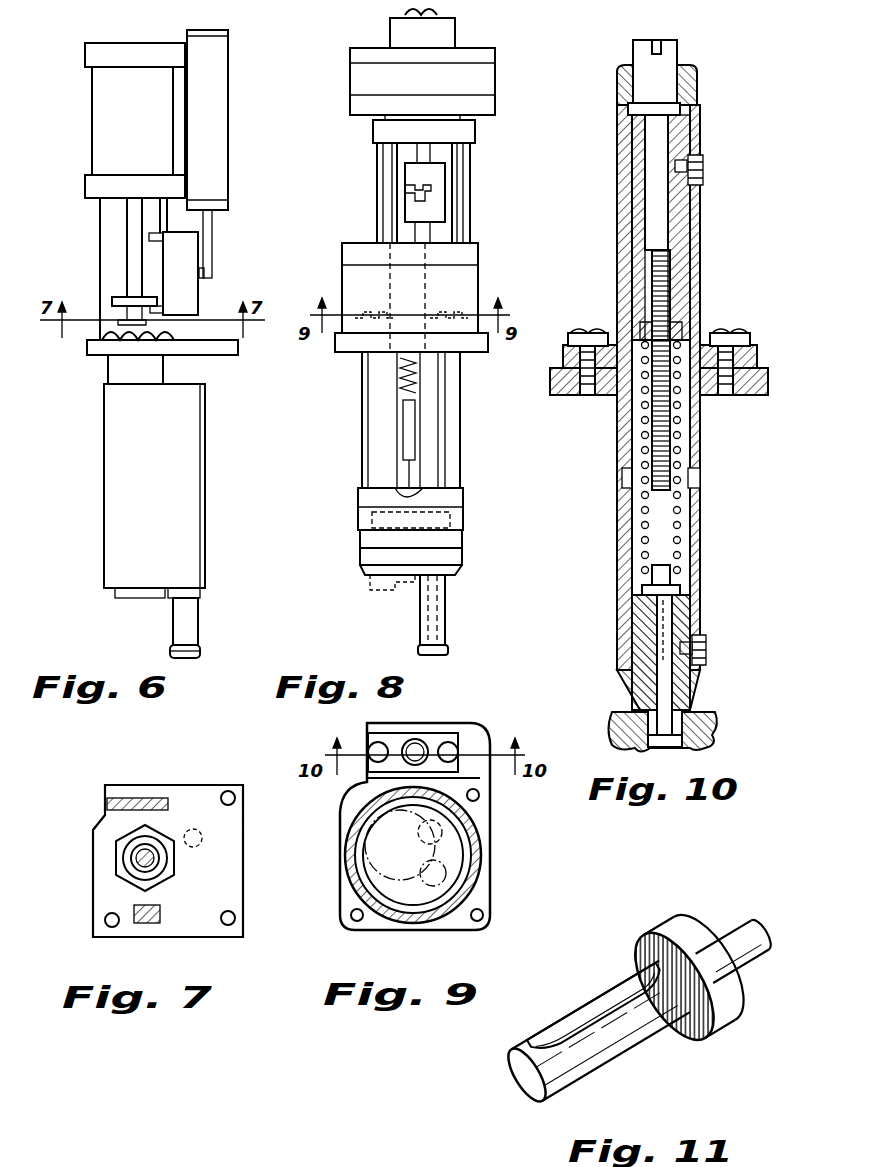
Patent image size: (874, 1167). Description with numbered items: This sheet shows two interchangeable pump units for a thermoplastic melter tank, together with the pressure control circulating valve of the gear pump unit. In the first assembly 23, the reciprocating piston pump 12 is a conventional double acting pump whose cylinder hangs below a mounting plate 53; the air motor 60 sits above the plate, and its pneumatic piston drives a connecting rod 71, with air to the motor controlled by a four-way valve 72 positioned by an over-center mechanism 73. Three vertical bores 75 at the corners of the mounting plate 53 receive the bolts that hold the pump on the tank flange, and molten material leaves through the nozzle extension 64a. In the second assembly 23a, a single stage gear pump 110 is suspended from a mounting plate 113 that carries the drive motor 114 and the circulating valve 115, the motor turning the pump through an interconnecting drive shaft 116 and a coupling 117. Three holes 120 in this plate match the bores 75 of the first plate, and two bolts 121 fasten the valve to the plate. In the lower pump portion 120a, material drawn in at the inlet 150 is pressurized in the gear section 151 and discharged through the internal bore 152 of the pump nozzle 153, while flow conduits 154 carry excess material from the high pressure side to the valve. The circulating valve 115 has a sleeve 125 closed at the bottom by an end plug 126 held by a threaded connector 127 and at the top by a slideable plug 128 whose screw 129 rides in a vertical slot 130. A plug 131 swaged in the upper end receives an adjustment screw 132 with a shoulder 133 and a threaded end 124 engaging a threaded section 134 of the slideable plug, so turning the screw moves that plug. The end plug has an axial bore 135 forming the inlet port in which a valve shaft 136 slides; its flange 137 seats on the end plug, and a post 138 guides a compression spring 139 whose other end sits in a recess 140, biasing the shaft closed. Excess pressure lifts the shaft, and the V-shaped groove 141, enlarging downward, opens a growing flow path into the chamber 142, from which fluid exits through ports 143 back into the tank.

In FIG. 6, the nut tightening assembly 23 is at (60, 82).
In FIG. 8, the nut tightening assembly (second embodiment) 23a is at (330, 65).
In FIG. 6, the reciprocating piston pump 12 is at (83, 525).
In FIG. 6, the mounting plate 53 is at (96, 350).
In FIG. 7, the mounting plate 53 is at (183, 783).
In FIG. 6, the air motor 60 is at (138, 121).
In FIG. 6, the nozzle extension 64a is at (195, 631).
In FIG. 7, the nozzle extension 64a is at (200, 845).
In FIG. 6, the connecting rod 71 is at (130, 226).
In FIG. 7, the connecting rod 71 is at (136, 862).
In FIG. 6, the 4-way valve 72 is at (215, 114).
In FIG. 6, the over-center mechanism 73 is at (190, 258).
In FIG. 7, the vertical bores 75 is at (235, 800).
In FIG. 8, the gear pump 110 is at (478, 538).
In FIG. 10, the gear pump 110 is at (720, 728).
In FIG. 8, the mounting plate 113 is at (343, 347).
In FIG. 9, the mounting plate 113 is at (480, 812).
In FIG. 10, the mounting plate 113 is at (760, 395).
In FIG. 8, the drive motor 114 is at (492, 70).
In FIG. 8, the circulating valve 115 is at (432, 295).
In FIG. 9, the circulating valve 115 is at (422, 745).
In FIG. 10, the circulating valve 115 is at (600, 595).
In FIG. 8, the interconnecting drive shaft 116 is at (440, 232).
In FIG. 8, the coupling 117 is at (450, 178).
In FIG. 9, the vertical holes 120 is at (480, 796).
In FIG. 8, the lower housing assembly 120a is at (333, 470).
In FIG. 8, the bolts 121 is at (455, 316).
In FIG. 9, the bolts 121 is at (452, 745).
In FIG. 10, the bolts 121 is at (592, 318).
In FIG. 10, the threaded lower end 124 is at (665, 453).
In FIG. 10, the sleeve 125 is at (692, 142).
In FIG. 10, the end plug 126 is at (632, 675).
In FIG. 10, the threaded connector 127 is at (708, 652).
In FIG. 10, the slideable plug 128 is at (685, 220).
In FIG. 10, the screw 129 is at (704, 172).
In FIG. 10, the vertical slot 130 is at (697, 250).
In FIG. 10, the plug 131 is at (680, 68).
In FIG. 10, the adjustment screw 132 is at (665, 60).
In FIG. 10, the shoulder 133 is at (684, 109).
In FIG. 10, the threaded section 134 is at (670, 283).
In FIG. 10, the axial bore 135 is at (675, 700).
In FIG. 10, the valve shaft 136 is at (668, 607).
In FIG. 11, the valve shaft 136 is at (597, 1063).
In FIG. 10, the flange 137 is at (682, 590).
In FIG. 11, the flange 137 is at (700, 1040).
In FIG. 10, the post 138 is at (652, 567).
In FIG. 11, the post 138 is at (757, 970).
In FIG. 10, the compression spring 139 is at (682, 520).
In FIG. 10, the recess 140 is at (690, 316).
In FIG. 10, the V-shaped groove 141 is at (657, 634).
In FIG. 11, the V-shaped groove 141 is at (615, 1008).
In FIG. 10, the chamber 142 is at (628, 535).
In FIG. 10, the ports 143 is at (622, 478).
In FIG. 8, the inlet 150 is at (384, 592).
In FIG. 8, the gear section 151 is at (372, 520).
In FIG. 8, the internal bore 152 is at (452, 605).
In FIG. 8, the pump nozzle 153 is at (448, 630).
In FIG. 9, the pump nozzle 153 is at (485, 850).
In FIG. 8, the flow conduits 154 is at (452, 505).
In FIG. 10, the flow conduits 154 is at (680, 748).